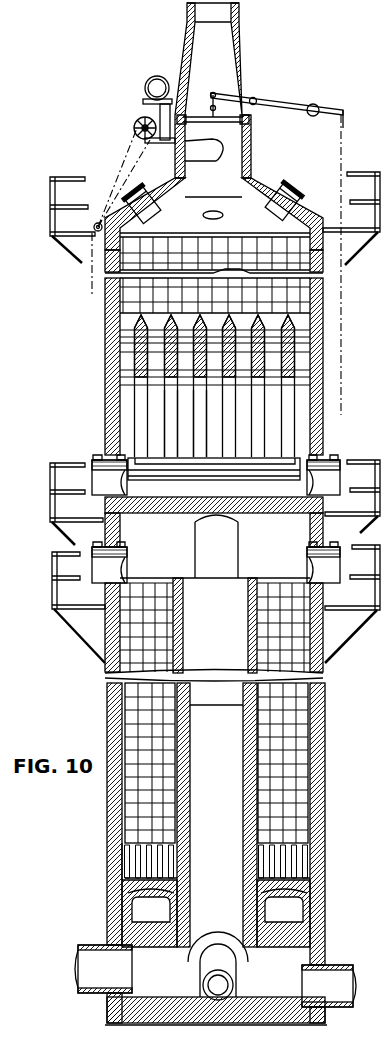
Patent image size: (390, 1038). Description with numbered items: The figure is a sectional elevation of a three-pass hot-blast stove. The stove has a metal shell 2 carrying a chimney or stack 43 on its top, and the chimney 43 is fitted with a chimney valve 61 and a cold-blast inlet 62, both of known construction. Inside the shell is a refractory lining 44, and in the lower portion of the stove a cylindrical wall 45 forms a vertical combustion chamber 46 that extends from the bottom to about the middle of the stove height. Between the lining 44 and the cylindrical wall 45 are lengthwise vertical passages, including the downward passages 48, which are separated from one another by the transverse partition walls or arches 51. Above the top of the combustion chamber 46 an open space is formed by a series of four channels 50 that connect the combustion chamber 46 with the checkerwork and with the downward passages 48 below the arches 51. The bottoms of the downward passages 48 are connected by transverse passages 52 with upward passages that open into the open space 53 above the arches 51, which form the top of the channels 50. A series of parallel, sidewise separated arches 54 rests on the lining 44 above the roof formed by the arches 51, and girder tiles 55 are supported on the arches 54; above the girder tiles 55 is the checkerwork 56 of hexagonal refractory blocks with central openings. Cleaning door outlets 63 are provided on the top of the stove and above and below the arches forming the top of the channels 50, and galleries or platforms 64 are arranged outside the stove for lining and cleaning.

The metal shell 2 is at (327, 821).
The chimney or stack 43 is at (252, 65).
The refractory lining 44 is at (317, 396).
The cylindrical wall 45 is at (248, 615).
The vertical combustion chamber 46 is at (217, 815).
The downward passages 48 is at (137, 780).
The channels 50 is at (215, 550).
The transverse partition walls or arches 51 is at (152, 513).
The transverse passages 52 is at (216, 913).
The open space 53 is at (160, 437).
The arches 54 is at (200, 412).
The girder tiles 55 is at (128, 330).
The checkerwork 56 is at (150, 303).
The chimney valve 61 is at (212, 93).
The cold-blast inlet 62 is at (208, 161).
The cleaning door outlets 63 is at (148, 197).
The galleries or platforms 64 is at (55, 256).